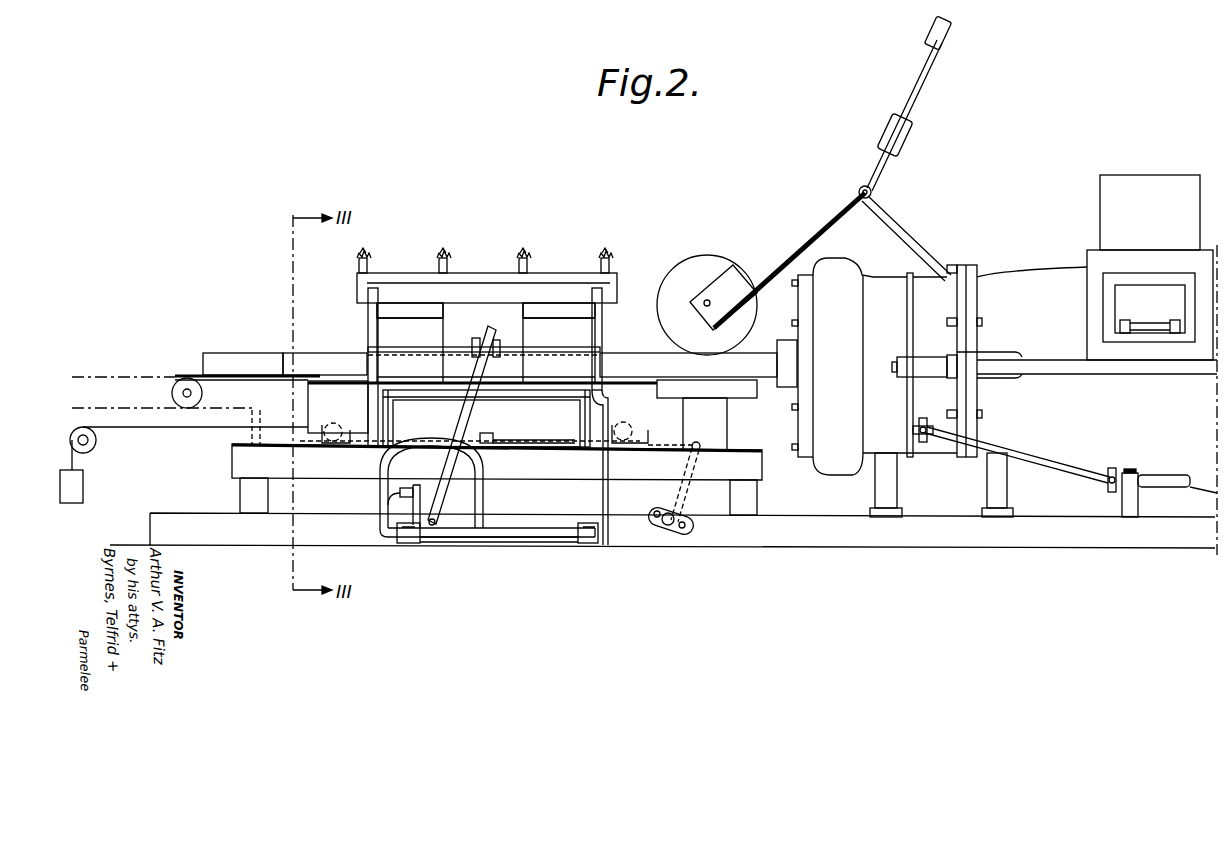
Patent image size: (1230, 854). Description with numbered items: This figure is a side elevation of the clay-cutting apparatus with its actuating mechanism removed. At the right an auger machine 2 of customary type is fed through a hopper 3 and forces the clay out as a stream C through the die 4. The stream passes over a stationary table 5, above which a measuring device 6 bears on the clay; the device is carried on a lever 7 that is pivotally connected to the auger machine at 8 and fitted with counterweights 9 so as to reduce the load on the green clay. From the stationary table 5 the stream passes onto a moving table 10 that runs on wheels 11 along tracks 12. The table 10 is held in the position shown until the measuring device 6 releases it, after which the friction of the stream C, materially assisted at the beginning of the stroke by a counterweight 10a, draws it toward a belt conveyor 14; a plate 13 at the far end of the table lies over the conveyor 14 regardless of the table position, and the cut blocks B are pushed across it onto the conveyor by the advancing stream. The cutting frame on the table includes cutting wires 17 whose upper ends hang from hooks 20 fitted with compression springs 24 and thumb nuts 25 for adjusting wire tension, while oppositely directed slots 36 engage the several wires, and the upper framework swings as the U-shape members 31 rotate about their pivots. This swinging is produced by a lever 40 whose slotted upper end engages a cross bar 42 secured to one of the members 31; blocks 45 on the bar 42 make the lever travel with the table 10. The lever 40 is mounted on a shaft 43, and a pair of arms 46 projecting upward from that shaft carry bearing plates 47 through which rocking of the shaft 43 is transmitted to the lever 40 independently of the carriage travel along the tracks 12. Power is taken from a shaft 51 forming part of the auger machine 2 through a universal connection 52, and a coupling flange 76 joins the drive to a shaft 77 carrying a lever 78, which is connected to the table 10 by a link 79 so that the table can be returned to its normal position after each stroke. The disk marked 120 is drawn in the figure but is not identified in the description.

The auger machine 2 is at (1004, 387).
The hopper 3 is at (1150, 267).
The die 4 is at (788, 350).
The stationary table 5 is at (742, 400).
The measuring device 6 is at (723, 297).
The lever 7 is at (812, 252).
The pivot 8 is at (858, 187).
The counterweights 9 is at (885, 132).
The moving table 10 is at (306, 416).
The counterweight 10a is at (83, 487).
The wheels 11 is at (322, 446).
The tracks 12 is at (497, 478).
The plate 13 is at (246, 377).
The belt conveyor 14 is at (140, 377).
The cutting wires 17 is at (513, 310).
The hooks 20 is at (528, 292).
The compression springs 24 is at (531, 258).
The thumb nuts 25 is at (530, 254).
The U-shape members 31 is at (376, 332).
The slots 36 is at (410, 302).
The lever 40 is at (462, 421).
The cross bar 42 is at (392, 351).
The shaft 43 is at (547, 538).
The blocks 45 is at (486, 340).
The arms 46 is at (382, 497).
The bearing plates 47 is at (382, 465).
The shaft 51 is at (1163, 481).
The universal connection 52 is at (1057, 467).
The coupling flange 76 is at (692, 526).
The shaft 77 is at (678, 530).
The lever 78 is at (688, 492).
The link 79 is at (537, 442).
The disk 120 is at (700, 262).
The blocks B is at (306, 370).
The clay stream C is at (625, 362).